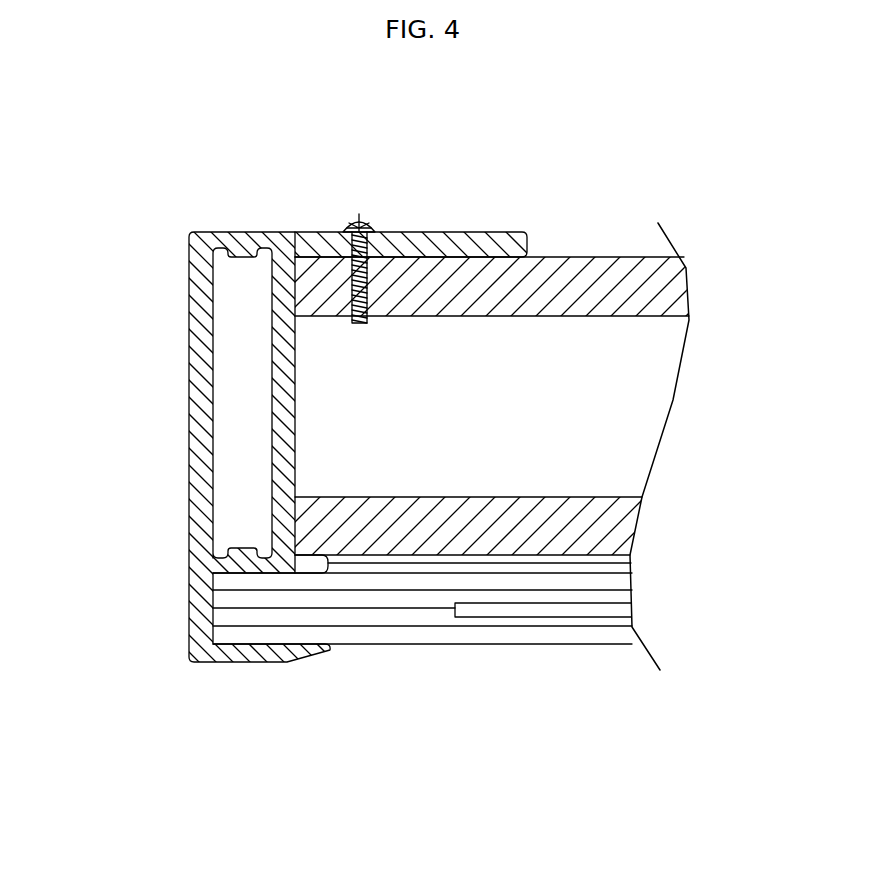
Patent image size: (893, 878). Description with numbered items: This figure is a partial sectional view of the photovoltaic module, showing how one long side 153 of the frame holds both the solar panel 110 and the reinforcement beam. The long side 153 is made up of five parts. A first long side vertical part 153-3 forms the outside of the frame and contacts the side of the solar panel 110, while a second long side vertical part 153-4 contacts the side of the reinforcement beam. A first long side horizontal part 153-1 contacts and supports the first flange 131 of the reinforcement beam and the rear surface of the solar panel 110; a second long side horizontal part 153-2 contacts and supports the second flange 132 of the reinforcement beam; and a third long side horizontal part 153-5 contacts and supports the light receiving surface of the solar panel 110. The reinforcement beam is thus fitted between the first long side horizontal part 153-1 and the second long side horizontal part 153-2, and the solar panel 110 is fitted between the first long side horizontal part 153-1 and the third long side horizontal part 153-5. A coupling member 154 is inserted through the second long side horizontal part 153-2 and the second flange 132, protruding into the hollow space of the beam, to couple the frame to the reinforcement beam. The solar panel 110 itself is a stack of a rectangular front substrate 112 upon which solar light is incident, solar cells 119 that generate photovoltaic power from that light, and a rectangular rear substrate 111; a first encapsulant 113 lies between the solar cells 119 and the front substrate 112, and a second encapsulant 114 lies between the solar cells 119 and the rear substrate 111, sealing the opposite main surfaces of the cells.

The solar panel 110 is at (430, 675).
The rear substrate 111 is at (343, 578).
The front substrate 112 is at (470, 633).
The first encapsulant 113 is at (383, 598).
The second encapsulant 114 is at (420, 617).
The solar cells 119 is at (578, 607).
The first flange 131 is at (577, 525).
The second flange 132 is at (628, 287).
The long side 153 is at (275, 406).
The first long side horizontal part 153-1 is at (303, 560).
The second long side horizontal part 153-2 is at (448, 233).
The first long side vertical part 153-3 is at (200, 413).
The second long side vertical part 153-4 is at (283, 352).
The third long side horizontal part 153-5 is at (270, 656).
The coupling member 154 is at (353, 222).